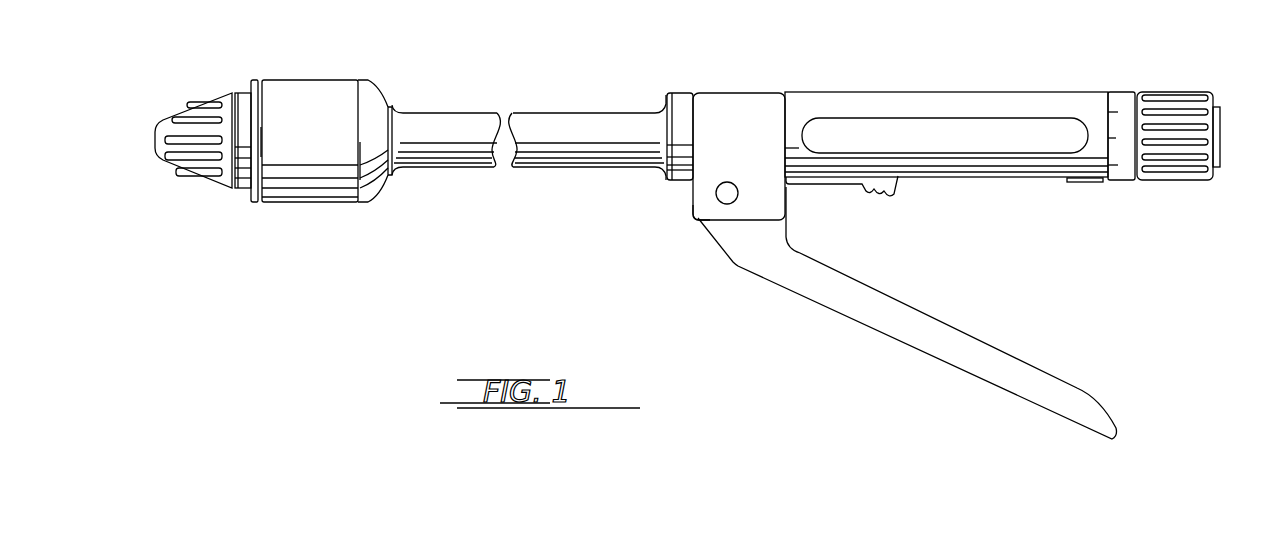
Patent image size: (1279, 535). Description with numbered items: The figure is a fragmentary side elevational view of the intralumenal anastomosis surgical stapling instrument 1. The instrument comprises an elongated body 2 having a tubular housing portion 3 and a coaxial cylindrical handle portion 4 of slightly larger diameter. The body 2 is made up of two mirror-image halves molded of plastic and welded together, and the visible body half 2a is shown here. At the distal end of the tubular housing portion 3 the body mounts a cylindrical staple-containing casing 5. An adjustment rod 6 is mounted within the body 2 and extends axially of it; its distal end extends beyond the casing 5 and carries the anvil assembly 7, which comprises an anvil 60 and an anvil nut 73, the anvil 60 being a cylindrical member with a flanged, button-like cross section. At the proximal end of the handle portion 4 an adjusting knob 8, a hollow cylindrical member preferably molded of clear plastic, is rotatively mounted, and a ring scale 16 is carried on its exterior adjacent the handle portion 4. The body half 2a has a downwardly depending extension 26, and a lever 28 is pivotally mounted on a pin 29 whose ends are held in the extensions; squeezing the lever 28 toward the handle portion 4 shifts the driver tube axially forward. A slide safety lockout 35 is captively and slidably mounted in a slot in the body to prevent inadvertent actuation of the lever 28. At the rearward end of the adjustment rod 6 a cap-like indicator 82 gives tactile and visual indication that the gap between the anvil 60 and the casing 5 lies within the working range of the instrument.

The intralumenal anastomosis surgical stapling instrument 1 is at (945, 236).
The elongated body 2 is at (946, 109).
The body half 2a is at (730, 150).
The tubular housing portion 3 is at (457, 122).
The cylindrical handle portion 4 is at (1027, 98).
The staple-containing casing 5 is at (325, 82).
The adjustment rod 6 is at (263, 140).
The anvil assembly 7 is at (178, 127).
The adjusting knob 8 is at (1193, 92).
The ring scale 16 is at (1123, 92).
The downwardly depending extension 26 is at (696, 214).
The lever 28 is at (843, 313).
The pin 29 is at (728, 184).
The slide safety lockout 35 is at (830, 184).
The anvil 60 is at (242, 97).
The anvil nut 73 is at (178, 157).
The cap-like indicator 82 is at (1220, 122).